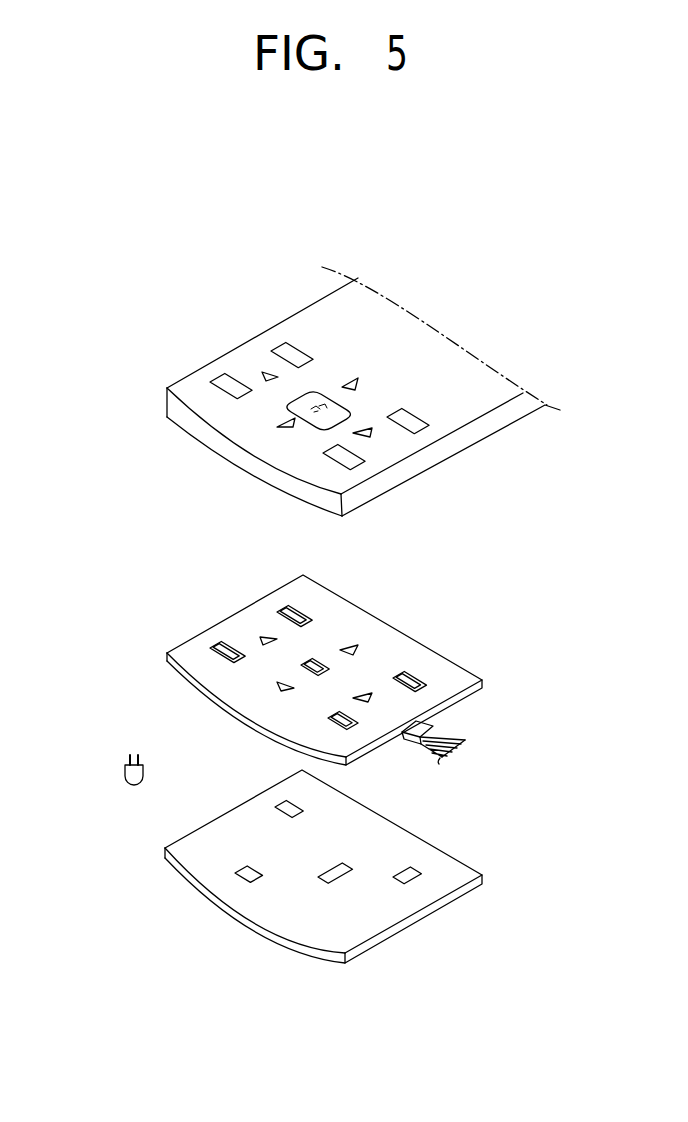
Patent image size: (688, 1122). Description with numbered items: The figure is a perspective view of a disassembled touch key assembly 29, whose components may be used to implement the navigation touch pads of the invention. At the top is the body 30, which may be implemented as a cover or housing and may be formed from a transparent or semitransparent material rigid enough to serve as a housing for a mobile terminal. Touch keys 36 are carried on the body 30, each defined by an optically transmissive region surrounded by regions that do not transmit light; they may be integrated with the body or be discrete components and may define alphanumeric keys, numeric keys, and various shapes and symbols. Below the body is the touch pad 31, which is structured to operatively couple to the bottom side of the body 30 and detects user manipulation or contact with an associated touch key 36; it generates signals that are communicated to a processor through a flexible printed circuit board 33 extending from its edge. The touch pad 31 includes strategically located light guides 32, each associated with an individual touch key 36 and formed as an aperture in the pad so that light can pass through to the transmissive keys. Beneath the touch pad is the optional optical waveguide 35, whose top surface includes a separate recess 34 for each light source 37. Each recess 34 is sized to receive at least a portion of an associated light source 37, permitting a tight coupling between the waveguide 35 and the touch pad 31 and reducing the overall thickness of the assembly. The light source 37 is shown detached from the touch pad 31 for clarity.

The touch key assembly 29 is at (548, 329).
The body 30 is at (371, 397).
The touch pad 31 is at (351, 647).
The light guide 32 is at (265, 630).
The flexible printed circuit board 33 is at (440, 727).
The recess 34 is at (245, 870).
The optical waveguide 35 is at (323, 847).
The touch key 36 is at (232, 387).
The light source 37 is at (108, 763).